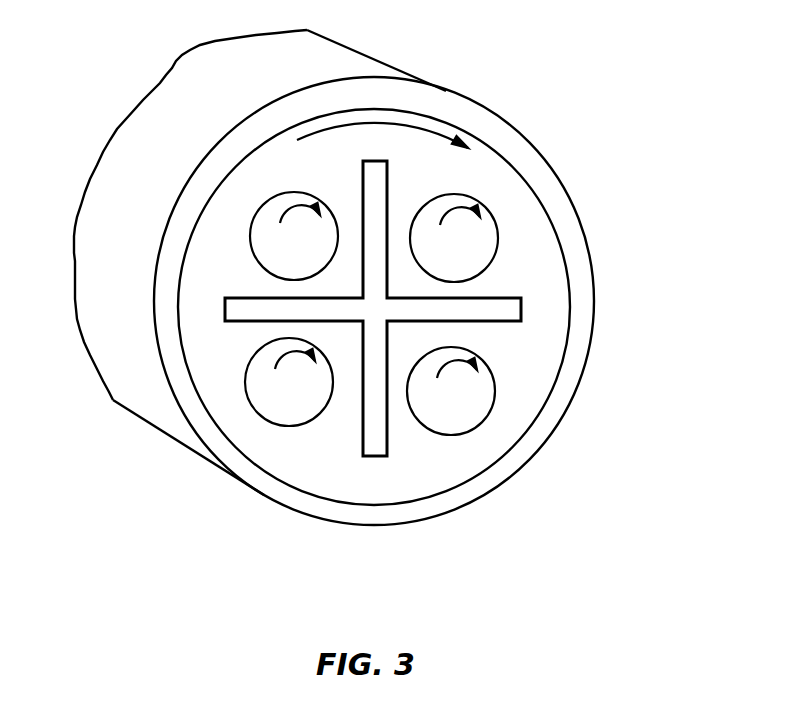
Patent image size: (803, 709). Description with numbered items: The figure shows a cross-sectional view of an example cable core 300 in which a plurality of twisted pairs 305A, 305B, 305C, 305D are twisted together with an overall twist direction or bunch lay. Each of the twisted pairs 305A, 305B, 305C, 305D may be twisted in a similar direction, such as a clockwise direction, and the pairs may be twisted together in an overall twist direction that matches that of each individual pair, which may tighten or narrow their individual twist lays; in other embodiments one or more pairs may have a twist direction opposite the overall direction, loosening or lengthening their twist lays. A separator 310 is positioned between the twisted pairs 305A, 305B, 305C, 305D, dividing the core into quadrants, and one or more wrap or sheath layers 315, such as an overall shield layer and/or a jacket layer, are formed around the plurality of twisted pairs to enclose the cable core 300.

The cable core 300 is at (233, 70).
The wrap or sheath layers 315 is at (517, 129).
The separator 310 is at (372, 445).
The twisted pair 305A is at (500, 228).
The twisted pair 305B is at (473, 395).
The twisted pair 305C is at (270, 425).
The twisted pair 305D is at (258, 200).